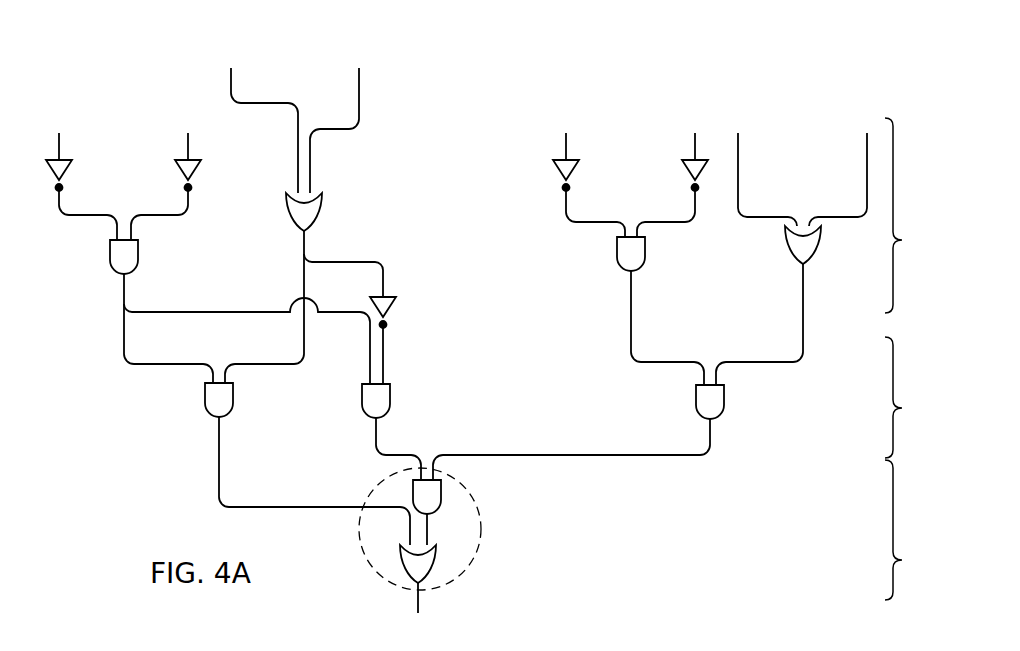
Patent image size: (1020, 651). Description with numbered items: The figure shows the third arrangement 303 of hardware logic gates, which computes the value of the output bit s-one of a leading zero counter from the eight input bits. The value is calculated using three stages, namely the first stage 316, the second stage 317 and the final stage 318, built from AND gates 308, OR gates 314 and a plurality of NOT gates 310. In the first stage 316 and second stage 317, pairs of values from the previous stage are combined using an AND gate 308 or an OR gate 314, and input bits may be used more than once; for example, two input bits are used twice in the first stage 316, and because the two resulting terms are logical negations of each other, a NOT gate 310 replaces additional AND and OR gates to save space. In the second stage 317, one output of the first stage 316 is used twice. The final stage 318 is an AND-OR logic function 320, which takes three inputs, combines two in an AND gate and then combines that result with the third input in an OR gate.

The third arrangement 303 is at (773, 71).
The AND gate 308 is at (378, 406).
The NOT gate 310 is at (178, 169).
The OR gate 314 is at (805, 253).
The first stage 316 is at (917, 215).
The second stage 317 is at (916, 397).
The final stage 318 is at (916, 530).
The AND-OR logic function 320 is at (483, 511).